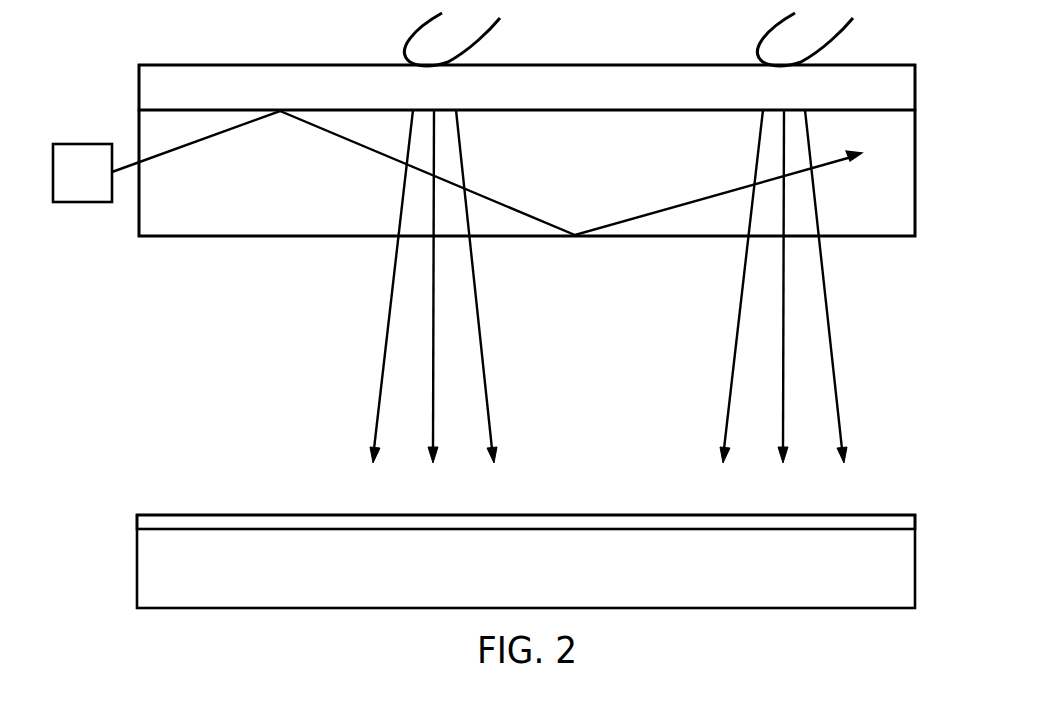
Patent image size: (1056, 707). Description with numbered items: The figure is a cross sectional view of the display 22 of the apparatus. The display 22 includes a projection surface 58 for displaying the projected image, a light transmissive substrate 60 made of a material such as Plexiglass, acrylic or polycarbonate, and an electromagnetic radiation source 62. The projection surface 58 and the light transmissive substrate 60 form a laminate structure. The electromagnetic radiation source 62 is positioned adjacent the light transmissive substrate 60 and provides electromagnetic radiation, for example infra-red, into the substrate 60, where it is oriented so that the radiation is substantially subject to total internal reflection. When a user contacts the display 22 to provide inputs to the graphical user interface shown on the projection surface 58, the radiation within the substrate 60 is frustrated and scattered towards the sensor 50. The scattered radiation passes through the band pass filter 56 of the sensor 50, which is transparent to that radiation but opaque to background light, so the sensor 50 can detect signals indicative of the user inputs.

The display 22 is at (978, 53).
The sensor 50 is at (908, 560).
The band pass filter 56 is at (890, 521).
The projection surface 58 is at (908, 87).
The light transmissive substrate 60 is at (908, 180).
The electromagnetic radiation source 62 is at (82, 173).